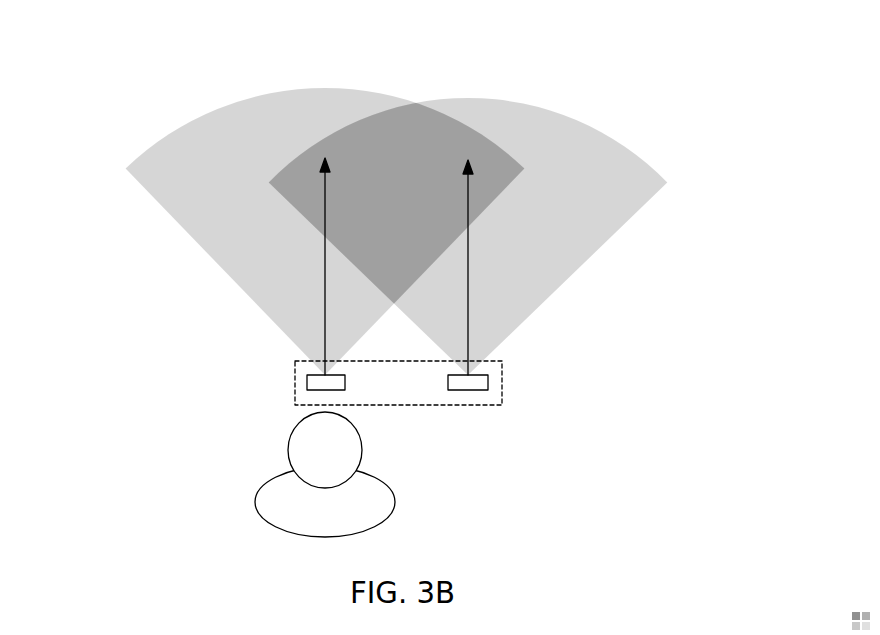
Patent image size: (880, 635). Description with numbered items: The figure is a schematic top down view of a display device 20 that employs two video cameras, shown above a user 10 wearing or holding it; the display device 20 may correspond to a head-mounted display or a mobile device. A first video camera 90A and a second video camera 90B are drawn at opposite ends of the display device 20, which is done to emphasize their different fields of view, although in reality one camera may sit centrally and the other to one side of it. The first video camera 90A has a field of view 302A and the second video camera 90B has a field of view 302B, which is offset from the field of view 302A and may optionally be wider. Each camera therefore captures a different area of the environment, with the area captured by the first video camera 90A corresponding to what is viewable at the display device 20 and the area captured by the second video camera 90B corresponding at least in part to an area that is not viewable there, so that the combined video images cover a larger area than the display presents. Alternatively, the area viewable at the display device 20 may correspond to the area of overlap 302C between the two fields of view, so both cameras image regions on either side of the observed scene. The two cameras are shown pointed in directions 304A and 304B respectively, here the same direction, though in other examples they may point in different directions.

The user 10 is at (395, 498).
The display device 20 is at (503, 402).
The first video camera 90A is at (307, 382).
The second video camera 90B is at (490, 380).
The field of view 302A is at (183, 193).
The field of view 302B is at (588, 238).
The area of overlap 302C is at (403, 148).
The direction 304A is at (323, 212).
The direction 304B is at (470, 228).